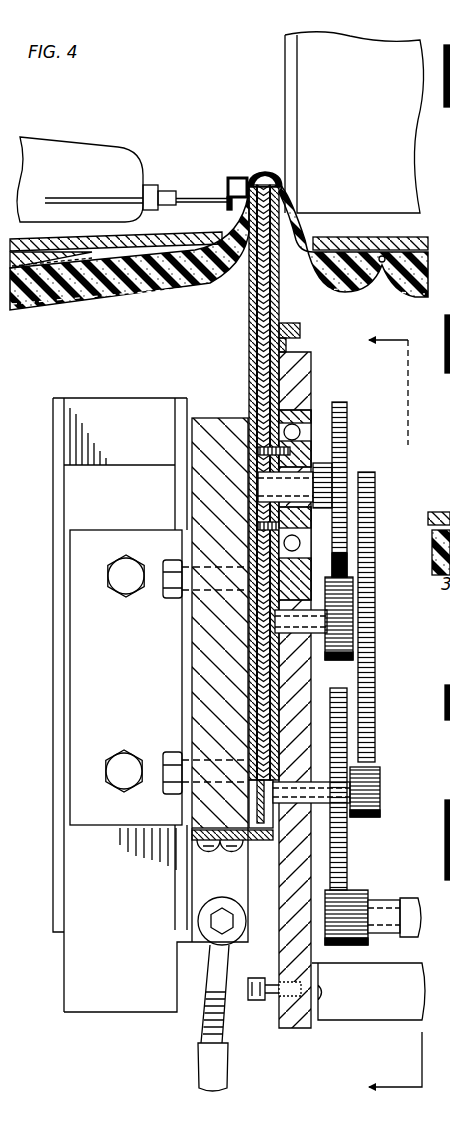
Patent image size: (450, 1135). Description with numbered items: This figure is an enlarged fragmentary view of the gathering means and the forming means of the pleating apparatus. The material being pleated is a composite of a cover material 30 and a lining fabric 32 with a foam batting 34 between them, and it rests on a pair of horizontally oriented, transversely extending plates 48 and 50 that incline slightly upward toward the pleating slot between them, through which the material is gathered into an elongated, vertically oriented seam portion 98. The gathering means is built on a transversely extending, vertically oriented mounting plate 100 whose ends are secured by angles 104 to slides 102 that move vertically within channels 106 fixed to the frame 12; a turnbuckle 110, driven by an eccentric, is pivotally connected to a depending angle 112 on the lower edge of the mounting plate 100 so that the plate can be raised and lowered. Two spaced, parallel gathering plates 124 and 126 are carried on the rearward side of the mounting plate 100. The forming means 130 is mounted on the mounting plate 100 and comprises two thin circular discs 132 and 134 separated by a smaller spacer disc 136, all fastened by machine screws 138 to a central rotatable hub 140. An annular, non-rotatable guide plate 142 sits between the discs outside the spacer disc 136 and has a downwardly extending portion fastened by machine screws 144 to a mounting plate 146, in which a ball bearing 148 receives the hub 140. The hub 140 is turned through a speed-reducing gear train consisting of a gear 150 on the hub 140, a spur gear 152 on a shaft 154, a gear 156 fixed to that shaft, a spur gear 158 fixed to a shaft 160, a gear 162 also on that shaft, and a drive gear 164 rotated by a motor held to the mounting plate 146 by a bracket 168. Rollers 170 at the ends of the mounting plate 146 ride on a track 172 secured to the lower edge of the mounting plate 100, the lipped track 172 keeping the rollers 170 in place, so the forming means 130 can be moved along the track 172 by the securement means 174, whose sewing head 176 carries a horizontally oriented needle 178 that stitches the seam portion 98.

The frame 12 is at (383, 716).
The cover material 30 is at (86, 302).
The lining fabric 32 is at (78, 256).
The batting 34 is at (62, 302).
The plate 48 is at (155, 241).
The plate 50 is at (380, 247).
The seam portion 98 is at (266, 174).
The mounting plate 100 is at (235, 418).
The slide 102 is at (133, 473).
The angle 104 is at (82, 553).
The channel 106 is at (58, 430).
The turnbuckle 110 is at (226, 1022).
The depending angle 112 is at (193, 941).
The gathering plate 124 is at (266, 313).
The gathering plate 126 is at (272, 288).
The forming means 130 is at (257, 290).
The circular disc 132 is at (259, 334).
The circular disc 134 is at (283, 343).
The spacer disc 136 is at (264, 355).
The machine screw 138 is at (300, 448).
The hub 140 is at (301, 418).
The guide plate 142 is at (283, 310).
The machine screw 144 is at (278, 838).
The mounting plate 146 is at (280, 952).
The ball bearing 148 is at (296, 410).
The gear 150 is at (341, 424).
The spur gear 152 is at (340, 621).
The shaft 154 is at (324, 607).
The gear 156 is at (376, 673).
The spur gear 158 is at (372, 782).
The shaft 160 is at (322, 783).
The gear 162 is at (346, 846).
The drive gear 164 is at (355, 895).
The bracket 168 is at (415, 968).
The roller 170 is at (258, 792).
The track 172 is at (200, 834).
The securement means 174 is at (123, 146).
The sewing head 176 is at (305, 103).
The needle 178 is at (203, 197).